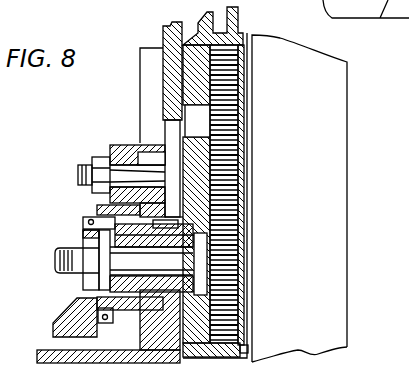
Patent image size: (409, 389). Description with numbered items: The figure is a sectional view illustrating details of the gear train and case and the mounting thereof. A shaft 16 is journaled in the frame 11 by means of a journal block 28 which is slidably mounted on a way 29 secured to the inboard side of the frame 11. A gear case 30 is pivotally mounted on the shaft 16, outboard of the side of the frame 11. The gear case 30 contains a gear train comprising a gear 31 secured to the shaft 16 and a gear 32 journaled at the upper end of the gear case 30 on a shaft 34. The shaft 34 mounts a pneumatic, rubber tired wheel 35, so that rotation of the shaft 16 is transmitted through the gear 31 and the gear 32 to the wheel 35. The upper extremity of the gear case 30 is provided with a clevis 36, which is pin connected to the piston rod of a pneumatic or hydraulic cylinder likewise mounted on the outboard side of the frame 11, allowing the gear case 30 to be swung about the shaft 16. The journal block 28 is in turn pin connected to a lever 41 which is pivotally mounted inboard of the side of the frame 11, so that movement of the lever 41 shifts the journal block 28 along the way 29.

The frame 11 is at (50, 350).
The shaft 16 is at (82, 244).
The journal block 28 is at (145, 247).
The way 29 is at (147, 77).
The gear case 30 is at (213, 175).
The gear 31 is at (228, 230).
The gear 32 is at (230, 60).
The shaft 34 is at (200, 108).
The pneumatic, rubber tired wheel 35 is at (338, 192).
The clevis 36 is at (237, 15).
The lever 41 is at (115, 143).